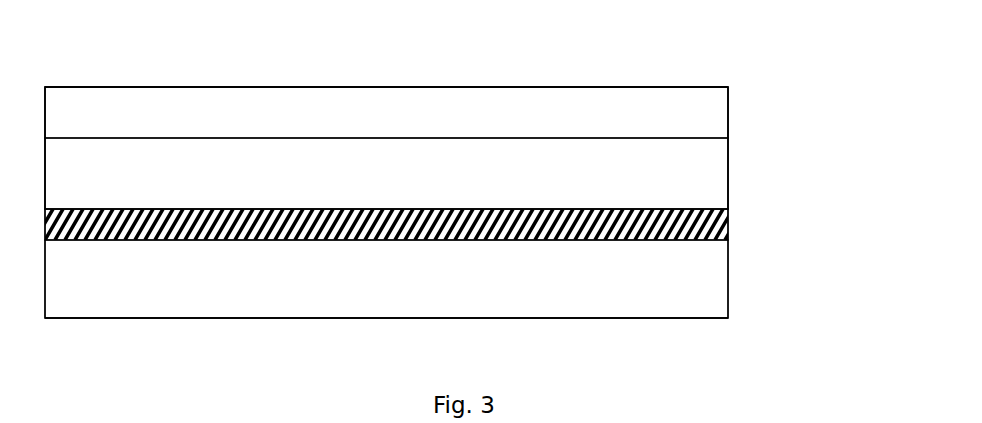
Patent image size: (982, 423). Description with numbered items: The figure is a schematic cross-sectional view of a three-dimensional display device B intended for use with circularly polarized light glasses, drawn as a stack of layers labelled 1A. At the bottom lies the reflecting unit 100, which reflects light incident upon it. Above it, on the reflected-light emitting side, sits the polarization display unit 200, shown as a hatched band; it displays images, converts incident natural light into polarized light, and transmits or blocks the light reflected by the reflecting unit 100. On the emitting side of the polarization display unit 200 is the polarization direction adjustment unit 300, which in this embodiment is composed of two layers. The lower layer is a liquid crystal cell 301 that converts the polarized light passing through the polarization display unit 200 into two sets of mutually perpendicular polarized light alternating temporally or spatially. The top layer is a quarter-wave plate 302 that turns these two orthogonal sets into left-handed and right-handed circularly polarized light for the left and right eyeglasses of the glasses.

The reflecting unit 100 is at (723, 278).
The polarization display unit 200 is at (728, 227).
The polarization direction adjustment unit 300 is at (822, 103).
The liquid crystal cell 301 is at (723, 178).
The λ/4 wave plate 302 is at (722, 111).
The 3D display device B is at (707, 72).
The structure 1A is at (592, 422).